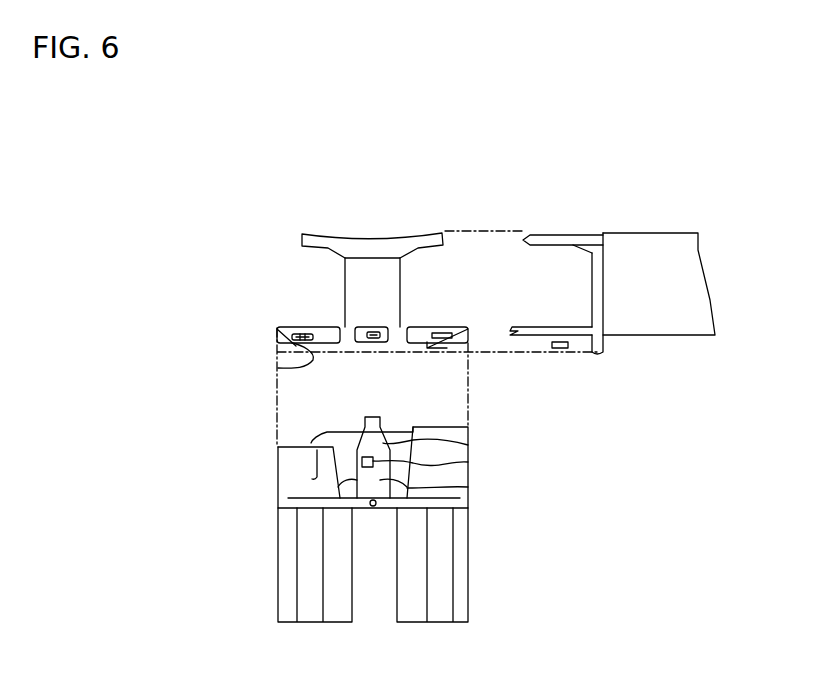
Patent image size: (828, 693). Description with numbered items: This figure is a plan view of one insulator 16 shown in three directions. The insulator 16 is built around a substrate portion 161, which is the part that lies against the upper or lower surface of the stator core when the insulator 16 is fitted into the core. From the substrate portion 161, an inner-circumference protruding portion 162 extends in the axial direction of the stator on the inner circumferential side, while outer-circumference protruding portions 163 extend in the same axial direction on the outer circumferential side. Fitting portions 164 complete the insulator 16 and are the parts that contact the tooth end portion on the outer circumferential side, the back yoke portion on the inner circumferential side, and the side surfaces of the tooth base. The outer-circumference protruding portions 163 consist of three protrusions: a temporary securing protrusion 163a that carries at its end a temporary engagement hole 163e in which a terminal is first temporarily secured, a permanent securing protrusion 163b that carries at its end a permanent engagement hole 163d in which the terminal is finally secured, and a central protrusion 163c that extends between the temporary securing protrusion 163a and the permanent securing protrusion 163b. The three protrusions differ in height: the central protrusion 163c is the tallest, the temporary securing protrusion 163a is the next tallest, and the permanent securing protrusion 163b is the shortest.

The insulator 16 is at (276, 208).
The substrate portion 161 is at (345, 298).
The inner-circumference protruding portion 162 is at (373, 240).
The outer-circumference protruding portions 163 is at (575, 428).
The temporary securing protrusion 163a is at (470, 352).
The permanent securing protrusion 163b is at (277, 340).
The central protrusion 163c is at (468, 445).
The permanent engagement hole 163d is at (277, 368).
The temporary engagement hole 163e is at (444, 328).
The fitting portions 164 is at (665, 318).